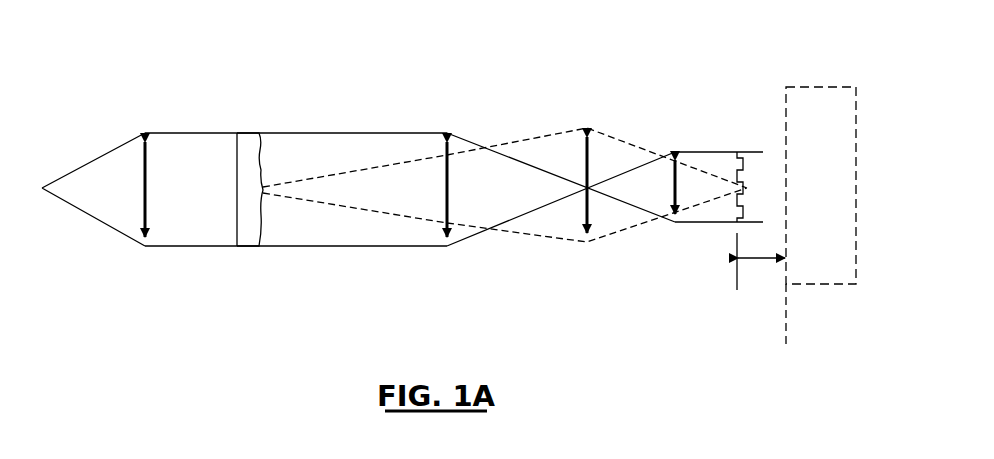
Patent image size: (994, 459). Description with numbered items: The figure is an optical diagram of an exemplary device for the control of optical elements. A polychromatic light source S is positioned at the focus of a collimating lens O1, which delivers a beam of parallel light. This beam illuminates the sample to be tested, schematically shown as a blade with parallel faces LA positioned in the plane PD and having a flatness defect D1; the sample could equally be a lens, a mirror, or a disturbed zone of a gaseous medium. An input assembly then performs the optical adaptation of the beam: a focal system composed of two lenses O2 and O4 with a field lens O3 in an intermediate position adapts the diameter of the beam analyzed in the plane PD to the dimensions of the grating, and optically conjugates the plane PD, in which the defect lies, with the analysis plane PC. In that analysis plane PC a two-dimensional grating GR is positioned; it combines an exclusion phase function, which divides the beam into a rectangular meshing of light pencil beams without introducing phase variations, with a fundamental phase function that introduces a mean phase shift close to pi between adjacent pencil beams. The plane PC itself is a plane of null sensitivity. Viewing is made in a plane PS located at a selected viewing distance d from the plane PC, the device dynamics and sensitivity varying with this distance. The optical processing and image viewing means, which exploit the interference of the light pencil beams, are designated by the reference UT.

The polychromatic light source S is at (89, 189).
The collimating lens O1 is at (141, 178).
The blade with parallel faces LA is at (243, 133).
The flatness defect D1 is at (262, 199).
The plane of the sample PD is at (247, 218).
The lens of the focal system O2 is at (443, 170).
The field lens O3 is at (581, 167).
The lens of the focal system O4 is at (668, 170).
The two-dimensional grating GR is at (737, 147).
The analysis plane PC is at (721, 286).
The viewing distance d is at (761, 273).
The viewing plane PS is at (771, 316).
The optical processing and image viewing means UT is at (818, 78).